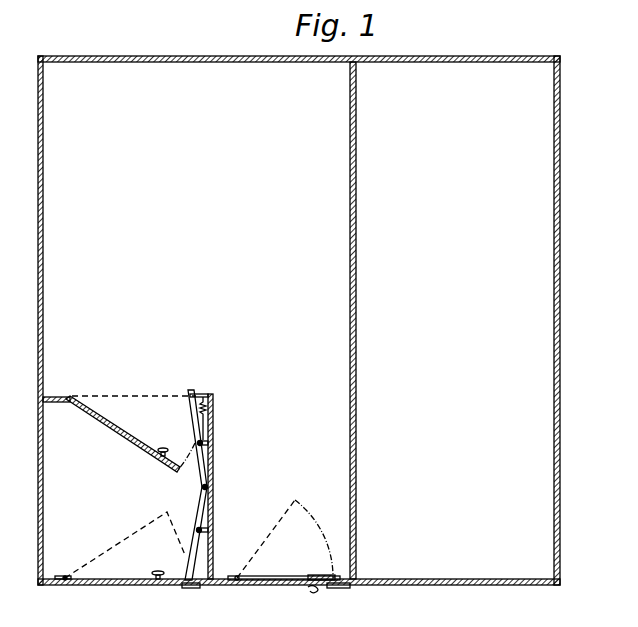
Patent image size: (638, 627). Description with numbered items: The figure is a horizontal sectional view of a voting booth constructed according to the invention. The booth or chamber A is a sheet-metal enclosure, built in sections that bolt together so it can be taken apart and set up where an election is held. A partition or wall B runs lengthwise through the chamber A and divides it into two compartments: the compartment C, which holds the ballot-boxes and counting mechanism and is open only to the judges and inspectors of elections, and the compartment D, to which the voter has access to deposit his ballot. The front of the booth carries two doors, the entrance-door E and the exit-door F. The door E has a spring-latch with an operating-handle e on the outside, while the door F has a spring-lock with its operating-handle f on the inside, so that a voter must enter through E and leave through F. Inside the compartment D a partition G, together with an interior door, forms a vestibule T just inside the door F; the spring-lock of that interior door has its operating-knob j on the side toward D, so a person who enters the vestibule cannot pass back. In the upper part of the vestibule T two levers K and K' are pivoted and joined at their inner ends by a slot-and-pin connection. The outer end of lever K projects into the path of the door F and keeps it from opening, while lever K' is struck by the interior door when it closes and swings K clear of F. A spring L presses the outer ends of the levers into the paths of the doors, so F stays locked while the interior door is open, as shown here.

The booth or chamber A is at (311, 320).
The partition or wall B is at (357, 270).
The compartment C is at (455, 320).
The compartment D is at (196, 320).
The vestibule T is at (125, 489).
The exit-door F is at (128, 585).
The partition G is at (214, 422).
The lever K is at (119, 434).
The lever K' is at (185, 485).
The spring L is at (212, 406).
The operating-knob j is at (162, 447).
The operating-handle f is at (157, 571).
The entrance-door E is at (277, 583).
The operating-handle e is at (315, 590).